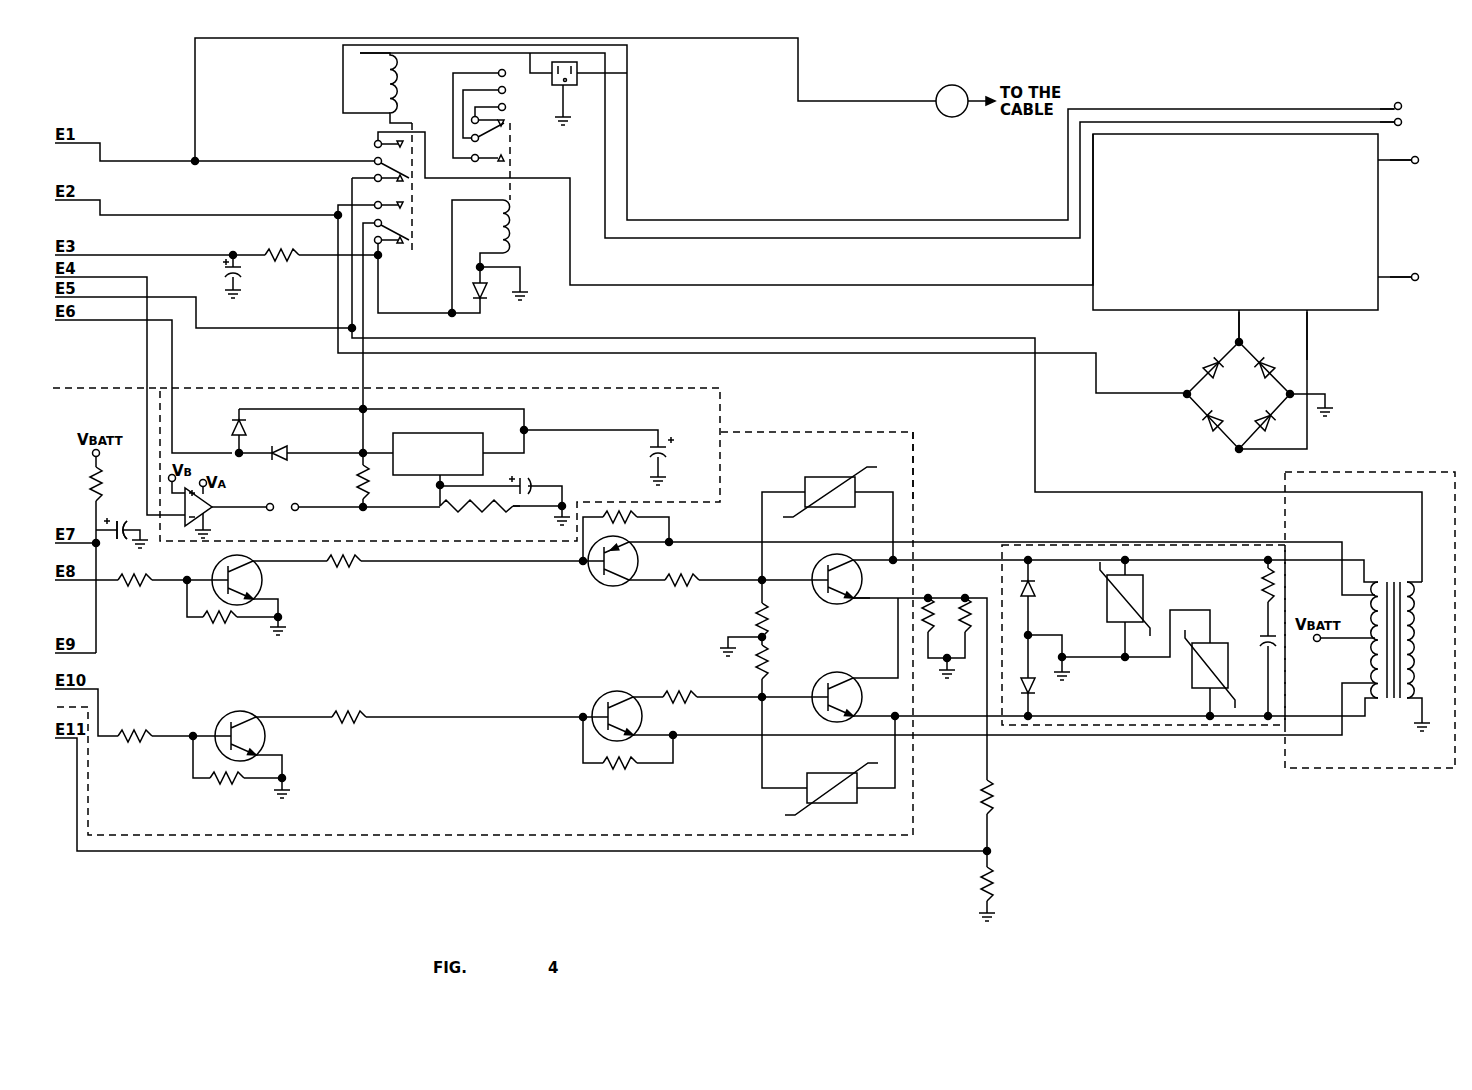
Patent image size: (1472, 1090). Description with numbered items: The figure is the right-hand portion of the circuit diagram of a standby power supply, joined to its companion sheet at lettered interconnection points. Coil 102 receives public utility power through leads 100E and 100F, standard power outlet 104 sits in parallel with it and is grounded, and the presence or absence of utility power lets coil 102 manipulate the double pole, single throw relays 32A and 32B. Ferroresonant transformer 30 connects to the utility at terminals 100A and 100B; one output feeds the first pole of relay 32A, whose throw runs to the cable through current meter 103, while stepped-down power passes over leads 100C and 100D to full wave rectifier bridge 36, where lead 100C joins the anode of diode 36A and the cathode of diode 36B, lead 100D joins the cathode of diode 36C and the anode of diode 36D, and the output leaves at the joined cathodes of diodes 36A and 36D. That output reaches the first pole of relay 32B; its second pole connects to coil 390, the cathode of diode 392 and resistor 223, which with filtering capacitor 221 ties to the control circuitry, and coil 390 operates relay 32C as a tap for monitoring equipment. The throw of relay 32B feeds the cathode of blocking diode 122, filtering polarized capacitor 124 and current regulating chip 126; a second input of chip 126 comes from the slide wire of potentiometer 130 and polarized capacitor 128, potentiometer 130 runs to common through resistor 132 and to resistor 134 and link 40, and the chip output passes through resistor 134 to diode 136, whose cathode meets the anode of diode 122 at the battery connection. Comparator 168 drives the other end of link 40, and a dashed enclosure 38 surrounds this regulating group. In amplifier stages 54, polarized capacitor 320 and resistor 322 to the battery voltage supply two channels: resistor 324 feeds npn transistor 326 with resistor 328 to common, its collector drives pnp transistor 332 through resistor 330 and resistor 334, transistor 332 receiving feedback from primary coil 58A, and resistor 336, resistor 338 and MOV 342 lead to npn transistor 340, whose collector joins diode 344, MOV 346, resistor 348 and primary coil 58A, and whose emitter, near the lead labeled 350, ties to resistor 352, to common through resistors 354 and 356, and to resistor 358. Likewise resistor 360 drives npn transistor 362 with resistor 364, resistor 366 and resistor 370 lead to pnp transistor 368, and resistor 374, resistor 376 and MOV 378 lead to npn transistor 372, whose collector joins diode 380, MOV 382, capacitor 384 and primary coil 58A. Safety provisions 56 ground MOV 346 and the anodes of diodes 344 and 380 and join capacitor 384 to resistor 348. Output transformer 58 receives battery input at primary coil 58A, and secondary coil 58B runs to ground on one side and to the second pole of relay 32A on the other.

The ferroresonant transformer 30 is at (1144, 314).
The relay 32A is at (371, 150).
The relay 32B is at (405, 233).
The relay 32C is at (505, 143).
The full wave rectifier bridge 36 is at (1244, 401).
The diode 36A is at (1204, 364).
The diode 36B is at (1264, 359).
The diode 36C is at (1264, 425).
The diode 36D is at (1200, 424).
The current regulator circuit 38 is at (648, 388).
The link 40 is at (285, 495).
The amplifier stages 54 is at (915, 492).
The safety provisions 56 is at (1143, 728).
The output transformer 58 is at (1378, 770).
The primary coil 58A is at (1372, 579).
The secondary coil 58B is at (1412, 705).
The terminal 100A is at (1418, 164).
The terminal 100B is at (1417, 274).
The lead 100C is at (1239, 322).
The lead 100D is at (1307, 317).
The lead 100E is at (1398, 104).
The lead 100F is at (1404, 124).
The coil 102 is at (404, 70).
The current meter 103 is at (960, 117).
The standard power outlet 104 is at (565, 85).
The blocking diode 122 is at (228, 428).
The filtering polarized capacitor 124 is at (650, 448).
The current regulating chip 126 is at (434, 433).
The polarized capacitor 128 is at (528, 478).
The potentiometer 130 is at (440, 506).
The resistor 132 is at (505, 516).
The resistor 134 is at (370, 485).
The diode 136 is at (290, 443).
The comparator 168 is at (214, 512).
The filtering polarized capacitor 221 is at (241, 274).
The resistor 223 is at (275, 247).
The polarized capacitor 320 is at (106, 545).
The resistor 322 is at (100, 484).
The resistor 324 is at (138, 589).
The npn transistor 326 is at (270, 582).
The resistor 328 is at (217, 626).
The resistor 330 is at (354, 570).
The pnp transistor 332 is at (587, 580).
The resistor 334 is at (621, 521).
The resistor 336 is at (683, 592).
The resistor 338 is at (769, 612).
The npn transistor 340 is at (822, 560).
The metal oxide varistor 342 is at (808, 468).
The diode 344 is at (1041, 589).
The metal oxide varistor 346 is at (1153, 591).
The resistor 348 is at (1264, 582).
The transistor emitter lead 350 is at (859, 580).
The resistor 352 is at (1001, 787).
The resistor 354 is at (928, 612).
The resistor 356 is at (968, 612).
The resistor 358 is at (1004, 876).
The resistor 360 is at (133, 732).
The npn transistor 362 is at (223, 716).
The resistor 364 is at (215, 794).
The resistor 366 is at (348, 703).
The pnp transistor 368 is at (615, 690).
The resistor 370 is at (615, 778).
The npn transistor 372 is at (843, 665).
The resistor 374 is at (677, 690).
The resistor 376 is at (774, 655).
The metal oxide varistor 378 is at (826, 767).
The diode 380 is at (1039, 692).
The metal oxide varistor 382 is at (1186, 668).
The capacitor 384 is at (1257, 632).
The coil 390 is at (522, 228).
The diode 392 is at (488, 302).